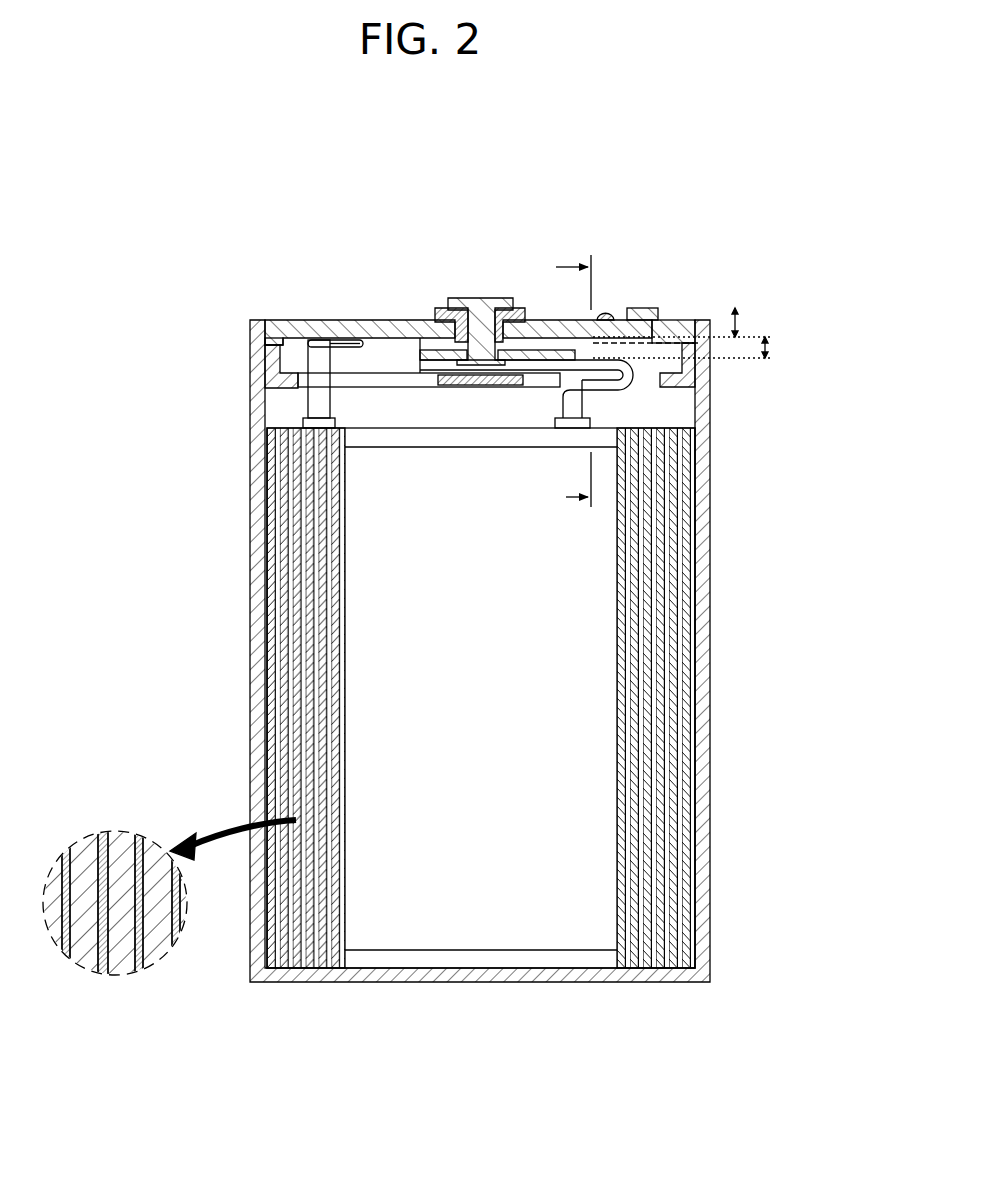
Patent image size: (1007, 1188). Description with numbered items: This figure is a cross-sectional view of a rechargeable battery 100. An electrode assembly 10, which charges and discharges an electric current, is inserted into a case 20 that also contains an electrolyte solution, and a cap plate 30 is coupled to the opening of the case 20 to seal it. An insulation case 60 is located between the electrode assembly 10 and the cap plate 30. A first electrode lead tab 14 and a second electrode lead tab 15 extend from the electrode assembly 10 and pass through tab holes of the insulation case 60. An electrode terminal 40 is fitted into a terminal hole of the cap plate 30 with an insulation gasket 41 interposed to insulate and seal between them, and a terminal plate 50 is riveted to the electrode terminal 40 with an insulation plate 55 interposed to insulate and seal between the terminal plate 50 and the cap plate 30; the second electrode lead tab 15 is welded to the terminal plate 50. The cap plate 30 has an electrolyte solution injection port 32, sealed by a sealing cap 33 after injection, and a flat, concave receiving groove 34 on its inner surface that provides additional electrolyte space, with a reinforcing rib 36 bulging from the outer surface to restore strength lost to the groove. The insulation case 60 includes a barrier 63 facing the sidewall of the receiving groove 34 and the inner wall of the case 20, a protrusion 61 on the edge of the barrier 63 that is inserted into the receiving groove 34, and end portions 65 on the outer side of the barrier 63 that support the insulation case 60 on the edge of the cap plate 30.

The rechargeable battery 100 is at (450, 186).
The electrode assembly 10 is at (280, 590).
The first electrode lead tab 14 is at (318, 408).
The second electrode lead tab 15 is at (606, 395).
The case 20 is at (712, 770).
The cap plate 30 is at (274, 330).
The electrolyte solution injection port 32 is at (672, 337).
The sealing cap 33 is at (643, 312).
The receiving groove 34 is at (384, 345).
The reinforcing rib 36 is at (604, 315).
The electrode terminal 40 is at (478, 305).
The insulation gasket 41 is at (441, 307).
The terminal plate 50 is at (537, 362).
The insulation plate 55 is at (413, 352).
The insulation case 60 is at (670, 392).
The protrusion 61 is at (310, 341).
The barrier 63 is at (292, 361).
The end portions 65 is at (262, 333).